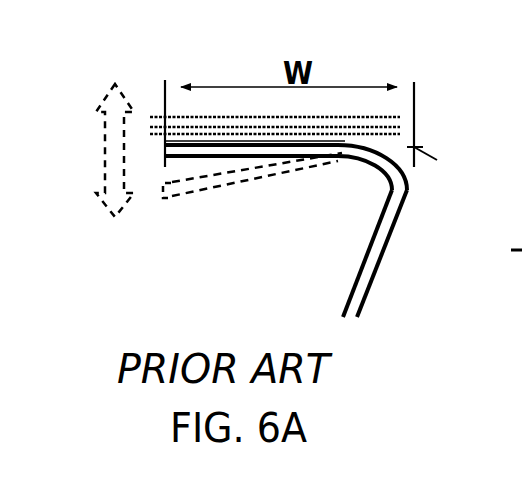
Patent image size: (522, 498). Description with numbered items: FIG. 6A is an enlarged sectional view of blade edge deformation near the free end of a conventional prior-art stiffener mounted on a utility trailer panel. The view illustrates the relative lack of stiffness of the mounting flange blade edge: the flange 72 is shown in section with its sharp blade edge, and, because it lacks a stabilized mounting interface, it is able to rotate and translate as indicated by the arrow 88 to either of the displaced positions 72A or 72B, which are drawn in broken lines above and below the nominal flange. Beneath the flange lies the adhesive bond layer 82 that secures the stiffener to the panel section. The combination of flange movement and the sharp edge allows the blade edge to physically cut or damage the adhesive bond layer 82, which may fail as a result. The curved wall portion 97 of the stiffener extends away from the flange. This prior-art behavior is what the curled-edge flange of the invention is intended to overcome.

The position of flange 72A is at (182, 118).
The flange 72 is at (206, 155).
The position of flange 72B is at (203, 190).
The adhesive bond layer 82 is at (348, 118).
The arrow 88 is at (113, 208).
The side wall edge 97 is at (346, 320).